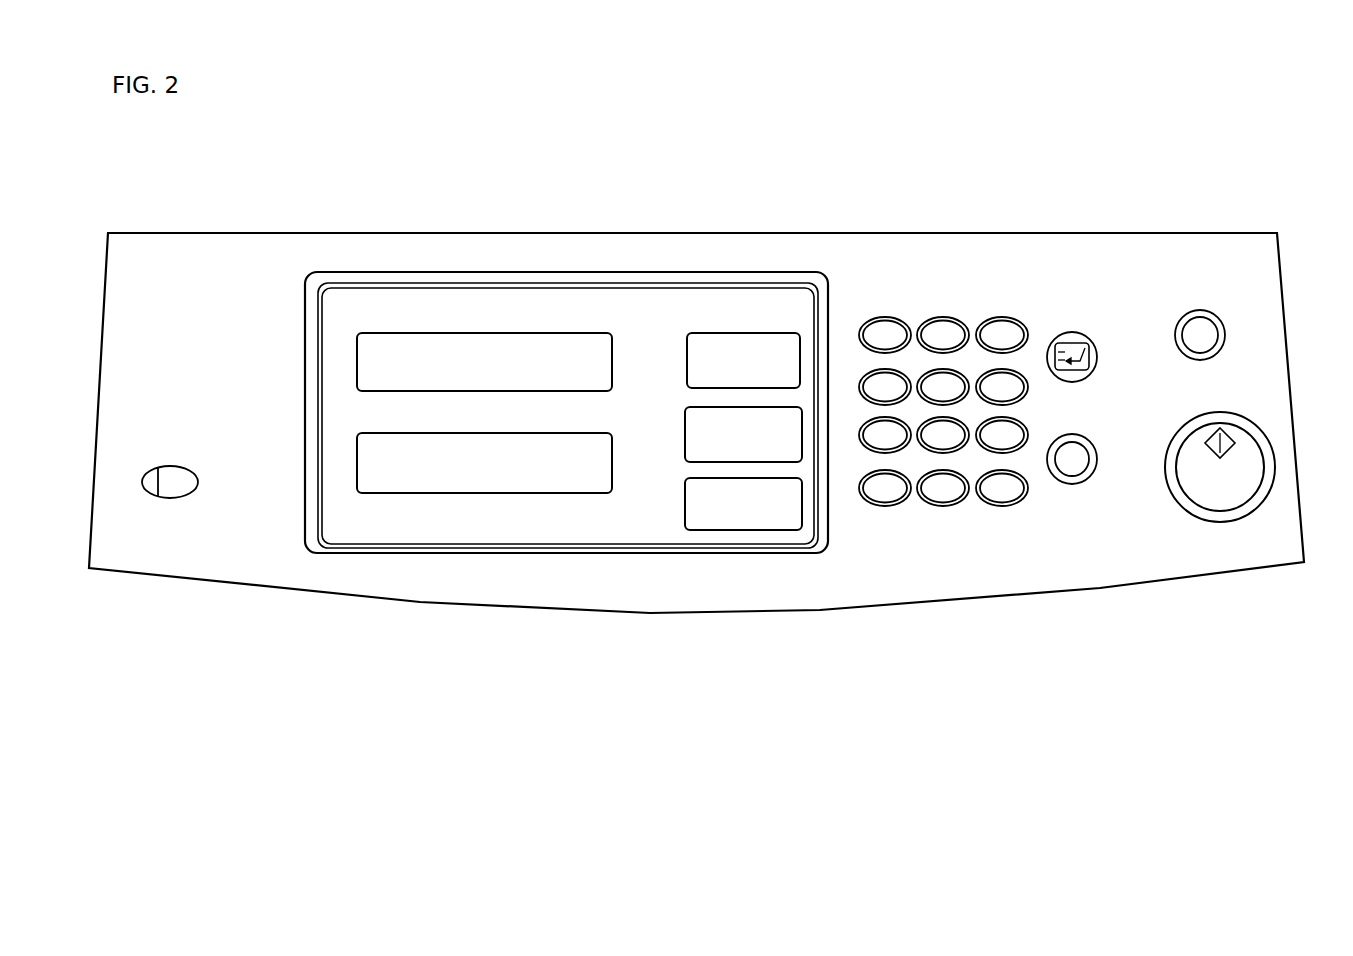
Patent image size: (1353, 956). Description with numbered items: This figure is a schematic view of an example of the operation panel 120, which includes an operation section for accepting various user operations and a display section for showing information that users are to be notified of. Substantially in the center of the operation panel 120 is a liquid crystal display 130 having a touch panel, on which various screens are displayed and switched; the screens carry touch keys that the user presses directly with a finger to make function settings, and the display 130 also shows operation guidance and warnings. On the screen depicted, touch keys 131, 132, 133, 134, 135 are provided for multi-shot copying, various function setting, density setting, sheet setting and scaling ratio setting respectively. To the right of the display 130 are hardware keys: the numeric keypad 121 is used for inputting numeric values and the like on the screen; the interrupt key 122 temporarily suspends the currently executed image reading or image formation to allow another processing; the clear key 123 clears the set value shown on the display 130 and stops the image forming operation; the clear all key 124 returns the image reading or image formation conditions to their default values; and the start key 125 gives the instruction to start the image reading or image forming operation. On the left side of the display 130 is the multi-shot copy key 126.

The operation panel 120 is at (724, 232).
The numeric keypad 121 is at (901, 308).
The interrupt key 122 is at (1063, 335).
The clear key 123 is at (1067, 478).
The clear all key 124 is at (1192, 315).
The start key 125 is at (1220, 498).
The multi-shot copy key 126 is at (172, 468).
The liquid crystal display 130 is at (566, 470).
The touch key 131 is at (474, 343).
The touch key 132 is at (475, 490).
The touch key 133 is at (703, 345).
The touch key 134 is at (695, 447).
The touch key 135 is at (768, 528).